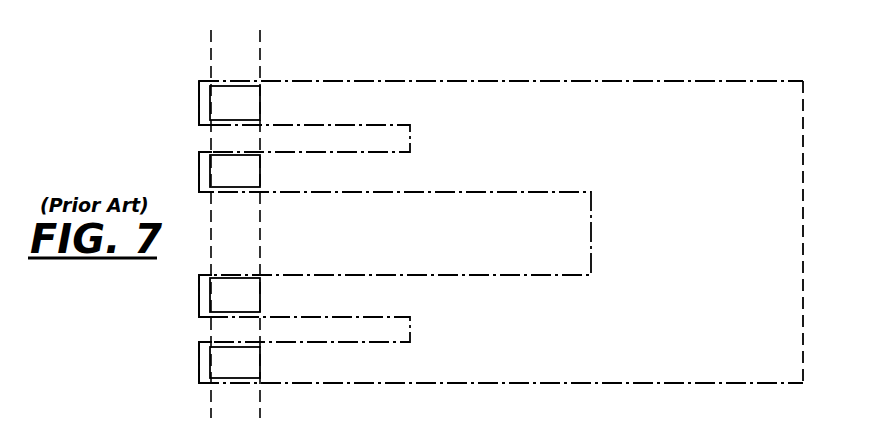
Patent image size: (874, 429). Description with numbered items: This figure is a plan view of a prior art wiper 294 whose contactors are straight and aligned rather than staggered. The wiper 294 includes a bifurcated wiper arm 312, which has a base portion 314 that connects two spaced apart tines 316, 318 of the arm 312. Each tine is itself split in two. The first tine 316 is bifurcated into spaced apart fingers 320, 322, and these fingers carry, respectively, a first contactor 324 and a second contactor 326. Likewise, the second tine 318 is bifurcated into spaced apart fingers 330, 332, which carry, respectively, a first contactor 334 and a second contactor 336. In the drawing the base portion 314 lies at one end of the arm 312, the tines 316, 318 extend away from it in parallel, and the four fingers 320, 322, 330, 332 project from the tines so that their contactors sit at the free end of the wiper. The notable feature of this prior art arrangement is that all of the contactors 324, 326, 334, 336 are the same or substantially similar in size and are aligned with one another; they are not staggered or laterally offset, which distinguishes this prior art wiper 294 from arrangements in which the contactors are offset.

The prior art wiper 294 is at (623, 57).
The bifurcated wiper arm 312 is at (740, 80).
The base portion 314 is at (765, 268).
The first tine 316 is at (503, 117).
The second tine 318 is at (545, 357).
The finger 320 is at (199, 105).
The finger 322 is at (199, 164).
The first contactor 324 is at (238, 95).
The second contactor 326 is at (245, 177).
The finger 330 is at (199, 298).
The finger 332 is at (199, 365).
The first contactor 334 is at (240, 277).
The second contactor 336 is at (247, 365).